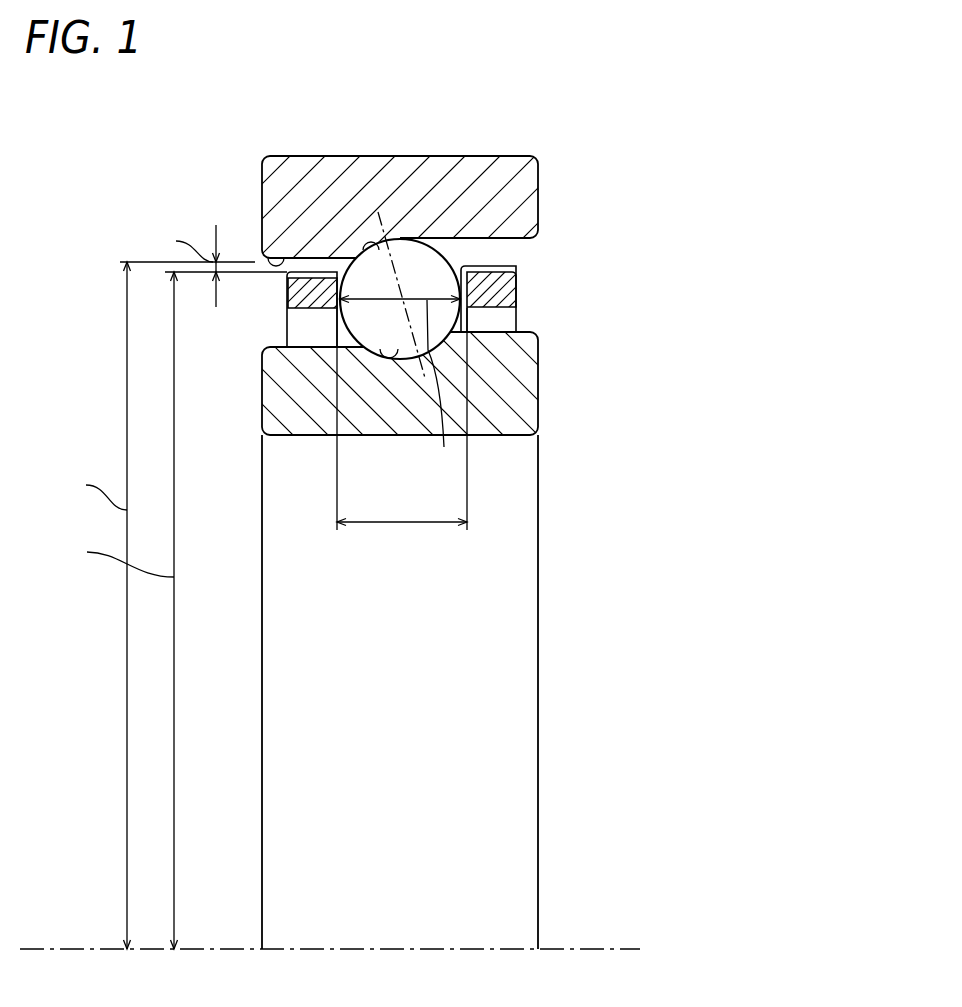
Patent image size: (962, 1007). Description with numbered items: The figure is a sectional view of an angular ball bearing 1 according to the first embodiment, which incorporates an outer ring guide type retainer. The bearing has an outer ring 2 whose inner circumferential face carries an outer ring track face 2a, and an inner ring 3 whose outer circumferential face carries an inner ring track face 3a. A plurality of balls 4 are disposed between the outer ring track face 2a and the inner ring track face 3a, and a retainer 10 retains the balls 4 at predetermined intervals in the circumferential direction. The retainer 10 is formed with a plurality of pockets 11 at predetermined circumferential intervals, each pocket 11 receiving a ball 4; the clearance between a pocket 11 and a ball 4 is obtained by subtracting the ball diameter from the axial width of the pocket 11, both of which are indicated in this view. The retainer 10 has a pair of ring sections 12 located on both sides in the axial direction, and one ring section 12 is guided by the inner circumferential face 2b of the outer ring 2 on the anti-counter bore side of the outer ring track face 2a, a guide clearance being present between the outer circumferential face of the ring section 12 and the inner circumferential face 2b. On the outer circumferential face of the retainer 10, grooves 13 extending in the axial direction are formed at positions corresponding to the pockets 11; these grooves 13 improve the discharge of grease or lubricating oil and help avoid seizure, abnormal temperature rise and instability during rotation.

The angular ball bearing 1 is at (483, 157).
The outer ring 2 is at (523, 198).
The outer ring track face 2a is at (365, 250).
The inner circumferential face 2b is at (272, 256).
The inner ring 3 is at (517, 403).
The inner ring track face 3a is at (384, 356).
The ball 4 is at (427, 258).
The retainer 10 is at (517, 288).
The pocket 11 is at (461, 266).
The ring section 12 is at (320, 272).
The groove 13 is at (298, 272).